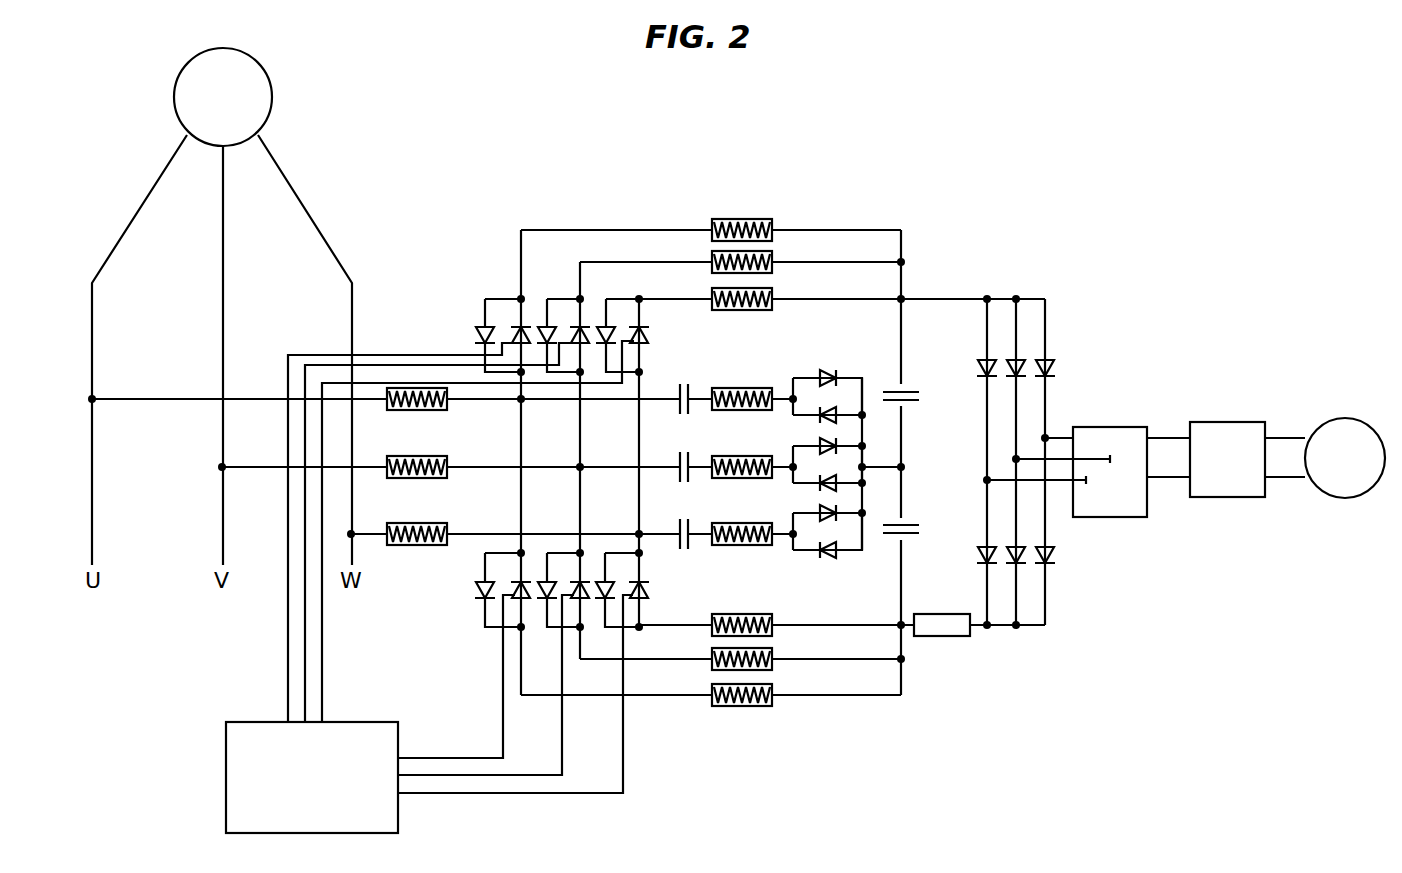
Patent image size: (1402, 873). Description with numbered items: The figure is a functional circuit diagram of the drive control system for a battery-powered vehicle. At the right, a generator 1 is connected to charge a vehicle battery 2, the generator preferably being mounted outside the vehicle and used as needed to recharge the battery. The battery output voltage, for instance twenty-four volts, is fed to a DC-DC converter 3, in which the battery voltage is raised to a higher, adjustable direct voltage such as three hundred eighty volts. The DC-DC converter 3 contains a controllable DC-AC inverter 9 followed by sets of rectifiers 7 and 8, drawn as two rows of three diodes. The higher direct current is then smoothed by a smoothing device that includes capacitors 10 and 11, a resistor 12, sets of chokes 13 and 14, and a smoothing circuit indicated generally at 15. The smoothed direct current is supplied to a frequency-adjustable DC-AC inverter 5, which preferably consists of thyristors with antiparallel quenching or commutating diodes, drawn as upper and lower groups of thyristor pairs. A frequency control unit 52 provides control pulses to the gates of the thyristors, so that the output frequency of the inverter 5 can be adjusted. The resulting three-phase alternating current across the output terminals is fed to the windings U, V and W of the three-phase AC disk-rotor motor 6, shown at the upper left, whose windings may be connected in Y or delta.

The generator 1 is at (1343, 420).
The vehicle battery 2 is at (1218, 422).
The DC-DC converter 3 is at (1065, 522).
The DC-AC inverter 5 is at (485, 640).
The three-phase AC disk-rotor motor 6 is at (272, 43).
The set of rectifiers 7 is at (1050, 356).
The set of rectifiers 8 is at (1050, 565).
The controllable DC-AC inverter 9 is at (1112, 427).
The capacitor 10 is at (932, 369).
The capacitor 11 is at (932, 503).
The resistor 12 is at (930, 613).
The set of chokes 13 is at (745, 713).
The set of chokes 14 is at (735, 218).
The smoothing circuit 15 is at (686, 585).
The frequency control unit 52 is at (362, 722).